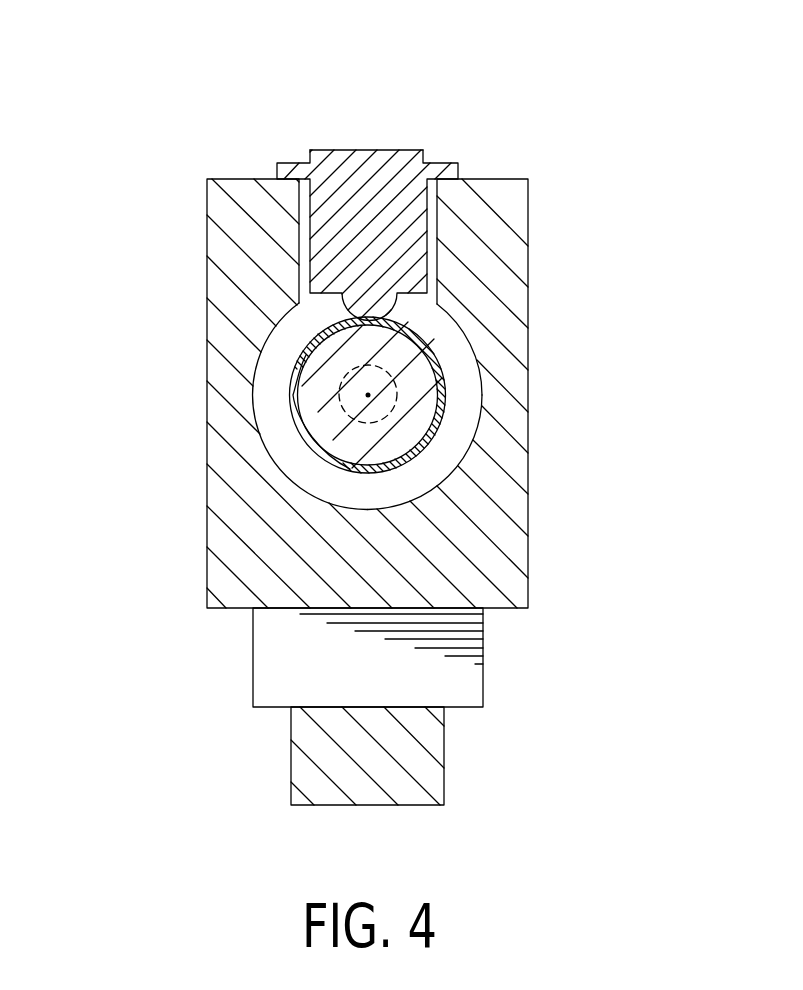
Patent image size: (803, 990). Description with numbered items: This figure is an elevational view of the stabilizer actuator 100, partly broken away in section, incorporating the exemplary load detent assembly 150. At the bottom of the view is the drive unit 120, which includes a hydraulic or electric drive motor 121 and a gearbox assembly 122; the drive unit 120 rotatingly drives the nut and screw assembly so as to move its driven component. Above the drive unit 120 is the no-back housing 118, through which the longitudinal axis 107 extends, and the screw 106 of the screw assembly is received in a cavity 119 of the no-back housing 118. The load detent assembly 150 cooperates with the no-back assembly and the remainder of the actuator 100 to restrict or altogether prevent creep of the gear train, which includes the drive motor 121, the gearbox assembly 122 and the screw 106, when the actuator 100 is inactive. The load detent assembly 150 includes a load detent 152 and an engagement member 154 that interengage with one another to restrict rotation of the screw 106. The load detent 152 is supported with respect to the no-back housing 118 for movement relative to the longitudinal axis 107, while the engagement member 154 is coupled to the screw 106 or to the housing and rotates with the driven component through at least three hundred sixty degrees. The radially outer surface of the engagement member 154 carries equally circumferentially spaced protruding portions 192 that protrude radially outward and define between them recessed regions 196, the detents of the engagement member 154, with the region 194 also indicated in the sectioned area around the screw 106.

The actuator 100 is at (175, 93).
The screw 106 is at (430, 408).
The longitudinal axis 107 is at (368, 395).
The no-back housing 118 is at (528, 555).
The cavity 119 is at (463, 338).
The drive unit 120 is at (462, 706).
The drive motor 121 is at (444, 775).
The gearbox assembly 122 is at (483, 657).
The load detent assembly 150 is at (415, 185).
The load detent 152 is at (373, 148).
The engagement member 154 is at (443, 423).
The protruding portions 192 is at (423, 310).
The gap 194 is at (312, 307).
The recessed regions 196 is at (297, 362).